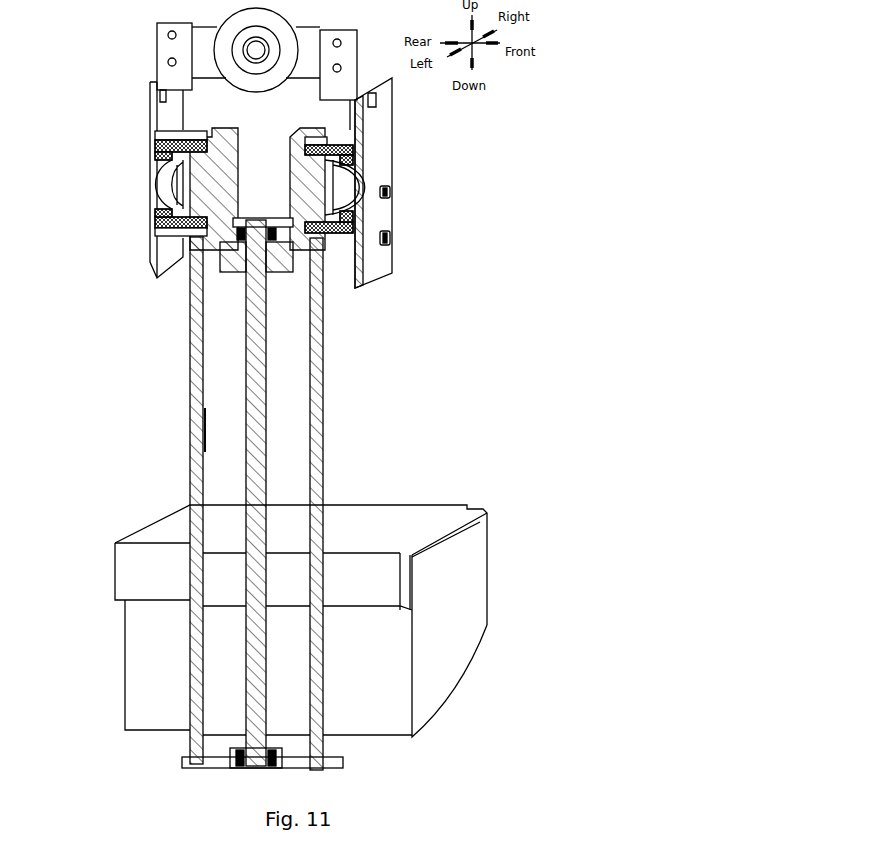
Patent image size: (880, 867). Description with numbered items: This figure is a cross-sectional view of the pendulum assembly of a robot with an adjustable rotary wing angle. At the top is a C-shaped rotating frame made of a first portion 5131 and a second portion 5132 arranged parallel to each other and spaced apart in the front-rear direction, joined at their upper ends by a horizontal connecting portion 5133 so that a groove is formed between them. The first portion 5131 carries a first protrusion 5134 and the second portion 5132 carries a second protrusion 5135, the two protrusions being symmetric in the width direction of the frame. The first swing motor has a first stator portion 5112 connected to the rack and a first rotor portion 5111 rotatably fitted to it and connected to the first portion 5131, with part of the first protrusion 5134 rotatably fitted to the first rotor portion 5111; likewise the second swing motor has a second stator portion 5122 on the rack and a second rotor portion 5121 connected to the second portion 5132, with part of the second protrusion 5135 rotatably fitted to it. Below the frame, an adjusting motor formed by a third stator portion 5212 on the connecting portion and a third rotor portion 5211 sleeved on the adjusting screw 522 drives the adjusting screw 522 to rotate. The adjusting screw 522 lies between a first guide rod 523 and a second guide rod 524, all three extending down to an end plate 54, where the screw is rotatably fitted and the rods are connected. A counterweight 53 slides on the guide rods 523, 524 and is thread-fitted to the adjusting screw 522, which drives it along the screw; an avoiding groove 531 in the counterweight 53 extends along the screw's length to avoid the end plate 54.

The first rotor portion 5111 is at (150, 133).
The first stator portion 5112 is at (155, 155).
The first portion 5131 is at (230, 167).
The first protrusion 5134 is at (195, 192).
The connecting portion 5133 is at (213, 240).
The third stator portion 5212 is at (225, 252).
The third rotor portion 5211 is at (222, 270).
The adjusting screw 522 is at (247, 358).
The first guide rod 523 is at (203, 425).
The second guide rod 524 is at (323, 415).
The counterweight 53 is at (170, 528).
The avoiding groove 531 is at (160, 655).
The end plate 54 is at (193, 755).
The second portion 5132 is at (367, 125).
The second protrusion 5135 is at (370, 178).
The second stator portion 5122 is at (358, 207).
The second rotor portion 5121 is at (383, 237).